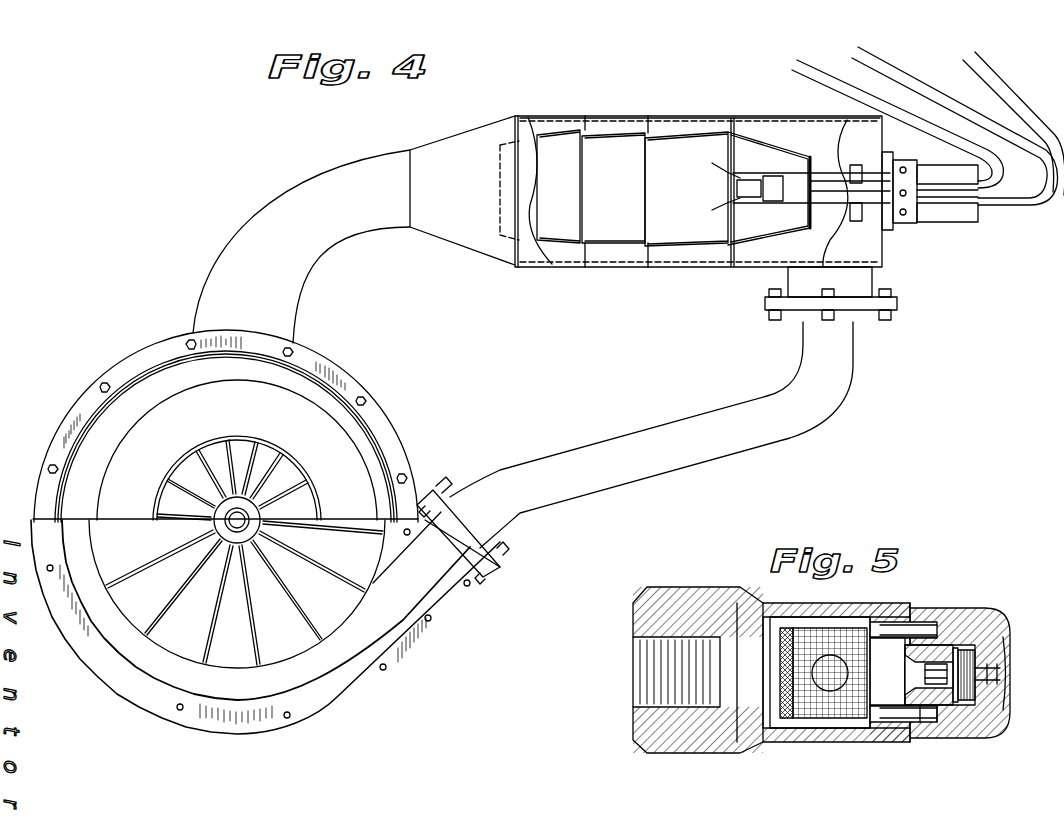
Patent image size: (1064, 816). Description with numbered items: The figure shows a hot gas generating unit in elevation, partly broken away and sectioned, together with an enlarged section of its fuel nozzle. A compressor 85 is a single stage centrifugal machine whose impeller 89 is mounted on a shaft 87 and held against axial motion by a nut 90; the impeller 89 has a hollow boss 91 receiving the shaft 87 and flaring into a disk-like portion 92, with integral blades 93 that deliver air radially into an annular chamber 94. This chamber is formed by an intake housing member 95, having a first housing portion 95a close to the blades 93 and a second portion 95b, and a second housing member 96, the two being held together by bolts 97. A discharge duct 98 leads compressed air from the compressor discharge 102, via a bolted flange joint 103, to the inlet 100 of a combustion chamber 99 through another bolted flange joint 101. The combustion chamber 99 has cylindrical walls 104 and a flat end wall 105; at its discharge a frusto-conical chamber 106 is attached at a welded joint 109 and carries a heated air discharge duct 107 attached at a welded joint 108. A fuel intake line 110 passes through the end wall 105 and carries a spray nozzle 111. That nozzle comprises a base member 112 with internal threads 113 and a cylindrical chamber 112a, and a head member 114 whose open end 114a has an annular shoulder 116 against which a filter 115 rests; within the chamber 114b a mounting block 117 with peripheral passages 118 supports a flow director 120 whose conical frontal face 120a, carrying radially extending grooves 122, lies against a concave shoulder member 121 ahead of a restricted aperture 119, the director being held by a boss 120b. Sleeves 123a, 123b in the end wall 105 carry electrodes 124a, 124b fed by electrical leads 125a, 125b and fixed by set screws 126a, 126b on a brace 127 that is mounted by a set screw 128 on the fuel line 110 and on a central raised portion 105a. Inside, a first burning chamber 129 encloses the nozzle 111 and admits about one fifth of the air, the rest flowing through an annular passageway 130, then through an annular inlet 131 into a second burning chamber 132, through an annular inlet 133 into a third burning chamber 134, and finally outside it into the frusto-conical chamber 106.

In FIG. 4, the compressor 85 is at (36, 478).
In FIG. 4, the shaft 87 is at (215, 517).
In FIG. 4, the impeller 89 is at (308, 656).
In FIG. 4, the nut 90 is at (262, 517).
In FIG. 4, the hollow boss 91 is at (270, 588).
In FIG. 4, the disk-like portion 92 is at (338, 615).
In FIG. 4, the blades 93 is at (263, 662).
In FIG. 4, the annular chamber 94 is at (78, 603).
In FIG. 4, the intake housing member 95 is at (63, 418).
In FIG. 4, the first housing portion 95a is at (345, 447).
In FIG. 4, the second portion 95b is at (322, 374).
In FIG. 4, the second housing member 96 is at (138, 704).
In FIG. 4, the bolts 97 is at (186, 345).
In FIG. 4, the discharge duct 98 is at (853, 386).
In FIG. 4, the combustion chamber 99 is at (586, 116).
In FIG. 4, the inlet 100 is at (873, 284).
In FIG. 4, the bolted flange joint 101 is at (897, 305).
In FIG. 4, the compressor discharge 102 is at (440, 582).
In FIG. 4, the bolted flange joint 103 is at (505, 565).
In FIG. 4, the cylindrical walls 104 is at (632, 116).
In FIG. 4, the end wall 105 is at (884, 263).
In FIG. 4, the central raised portion 105a is at (878, 150).
In FIG. 4, the frusto-conical chamber 106 is at (478, 252).
In FIG. 4, the heated air discharge duct 107 is at (290, 185).
In FIG. 4, the welded joint 108 is at (412, 150).
In FIG. 4, the welded joint 109 is at (526, 116).
In FIG. 4, the fuel intake line 110 is at (1050, 192).
In FIG. 4, the spray nozzle 111 is at (753, 177).
In FIG. 5, the spray nozzle 111 is at (884, 605).
In FIG. 5, the base member 112 is at (672, 587).
In FIG. 5, the cylindrical chamber 112a is at (760, 715).
In FIG. 5, the internal threads 113 is at (640, 690).
In FIG. 5, the head member 114 is at (990, 628).
In FIG. 5, the open end 114a is at (868, 726).
In FIG. 5, the chamber 114b is at (905, 634).
In FIG. 5, the filter 115 is at (830, 715).
In FIG. 5, the annular shoulder 116 is at (866, 625).
In FIG. 5, the mounting block 117 is at (945, 705).
In FIG. 5, the peripheral passages 118 is at (925, 720).
In FIG. 5, the restricted aperture 119 is at (1000, 680).
In FIG. 5, the flow director 120 is at (975, 710).
In FIG. 5, the conical frontal face 120a is at (985, 660).
In FIG. 5, the boss 120b is at (955, 652).
In FIG. 5, the concave shoulder member 121 is at (997, 708).
In FIG. 5, the radially extending grooves 122 is at (1000, 690).
In FIG. 4, the sleeve 123a is at (968, 221).
In FIG. 4, the sleeve 123b is at (960, 165).
In FIG. 4, the electrode 124a is at (712, 207).
In FIG. 4, the electrode 124b is at (712, 168).
In FIG. 4, the electrical lead 125a is at (868, 60).
In FIG. 4, the electrical lead 125b is at (826, 79).
In FIG. 4, the set screw 126a is at (904, 216).
In FIG. 4, the set screw 126b is at (903, 167).
In FIG. 4, the brace 127 is at (942, 224).
In FIG. 4, the set screw 128 is at (917, 180).
In FIG. 4, the first burning chamber 129 is at (745, 247).
In FIG. 4, the annular passageway 130 is at (732, 250).
In FIG. 4, the annular inlet 131 is at (670, 253).
In FIG. 4, the second burning chamber 132 is at (622, 255).
In FIG. 4, the annular inlet 133 is at (584, 256).
In FIG. 4, the third burning chamber 134 is at (548, 266).